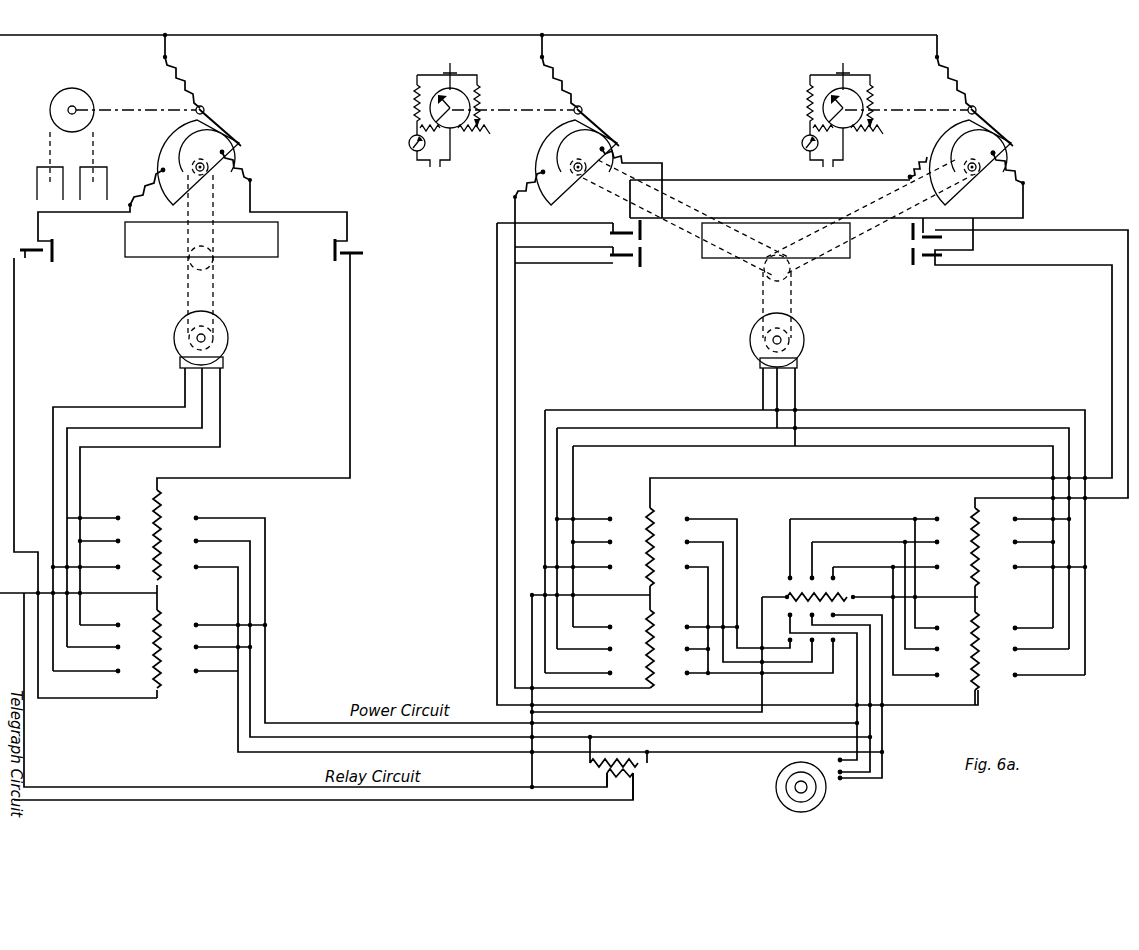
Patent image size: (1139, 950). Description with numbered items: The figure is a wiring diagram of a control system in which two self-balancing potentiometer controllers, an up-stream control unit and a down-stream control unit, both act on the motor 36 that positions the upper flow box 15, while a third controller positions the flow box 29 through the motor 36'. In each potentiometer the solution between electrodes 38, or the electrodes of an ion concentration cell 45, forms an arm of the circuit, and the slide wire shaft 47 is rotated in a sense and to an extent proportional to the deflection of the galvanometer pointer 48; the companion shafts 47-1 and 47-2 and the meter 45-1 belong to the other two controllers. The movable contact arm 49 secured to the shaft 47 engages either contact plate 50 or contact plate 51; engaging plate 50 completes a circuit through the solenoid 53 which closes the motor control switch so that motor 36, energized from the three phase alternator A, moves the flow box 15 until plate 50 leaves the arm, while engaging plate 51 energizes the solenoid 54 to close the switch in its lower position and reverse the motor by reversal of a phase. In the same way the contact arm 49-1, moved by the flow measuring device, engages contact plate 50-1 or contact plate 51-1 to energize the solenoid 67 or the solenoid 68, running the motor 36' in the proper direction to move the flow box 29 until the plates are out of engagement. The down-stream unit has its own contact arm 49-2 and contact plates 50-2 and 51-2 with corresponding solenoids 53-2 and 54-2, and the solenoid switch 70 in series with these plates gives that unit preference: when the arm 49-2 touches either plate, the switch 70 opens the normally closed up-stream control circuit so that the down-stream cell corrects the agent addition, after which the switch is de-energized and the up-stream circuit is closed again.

The upper flow box 15 is at (846, 259).
The flow box 29 is at (268, 228).
The motor 36 is at (794, 340).
The motor 36' is at (218, 339).
The electrodes 38 is at (452, 126).
The ion concentration cell 45 is at (845, 119).
The meter 45-1 is at (802, 144).
The shaft 47 is at (513, 97).
The shaft 47-1 is at (136, 100).
The shaft 47-2 is at (906, 96).
The galvanometer pointer 48 is at (409, 145).
The movable contact arm 49 is at (583, 108).
The contact arm 49-1 is at (219, 121).
The contact arm 49-2 is at (991, 119).
The contact plate 50 is at (535, 154).
The contact plate 50-1 is at (160, 152).
The contact plate 50-2 is at (935, 153).
The contact plate 51 is at (606, 150).
The contact plate 51-1 is at (230, 153).
The contact plate 51-2 is at (985, 152).
The solenoid 53 is at (670, 522).
The resistance 53-2 is at (993, 520).
The solenoid 54 is at (656, 670).
The resistance 54-2 is at (980, 676).
The solenoid 67 is at (163, 512).
The solenoid 68 is at (163, 660).
The solenoid switch 70 is at (835, 590).
The three phase alternator A is at (826, 790).